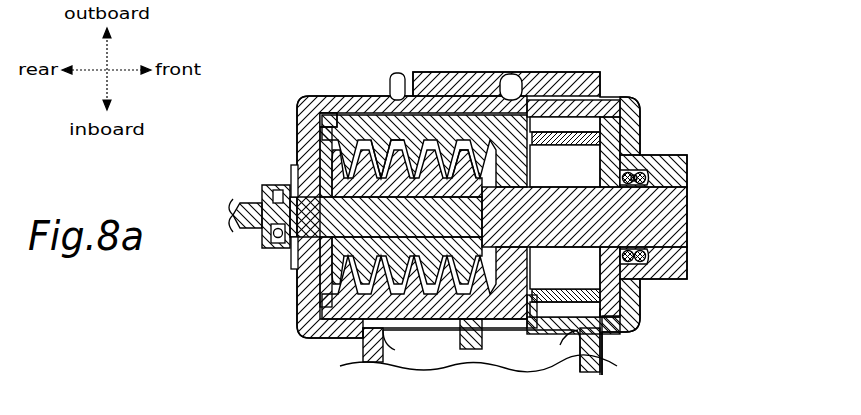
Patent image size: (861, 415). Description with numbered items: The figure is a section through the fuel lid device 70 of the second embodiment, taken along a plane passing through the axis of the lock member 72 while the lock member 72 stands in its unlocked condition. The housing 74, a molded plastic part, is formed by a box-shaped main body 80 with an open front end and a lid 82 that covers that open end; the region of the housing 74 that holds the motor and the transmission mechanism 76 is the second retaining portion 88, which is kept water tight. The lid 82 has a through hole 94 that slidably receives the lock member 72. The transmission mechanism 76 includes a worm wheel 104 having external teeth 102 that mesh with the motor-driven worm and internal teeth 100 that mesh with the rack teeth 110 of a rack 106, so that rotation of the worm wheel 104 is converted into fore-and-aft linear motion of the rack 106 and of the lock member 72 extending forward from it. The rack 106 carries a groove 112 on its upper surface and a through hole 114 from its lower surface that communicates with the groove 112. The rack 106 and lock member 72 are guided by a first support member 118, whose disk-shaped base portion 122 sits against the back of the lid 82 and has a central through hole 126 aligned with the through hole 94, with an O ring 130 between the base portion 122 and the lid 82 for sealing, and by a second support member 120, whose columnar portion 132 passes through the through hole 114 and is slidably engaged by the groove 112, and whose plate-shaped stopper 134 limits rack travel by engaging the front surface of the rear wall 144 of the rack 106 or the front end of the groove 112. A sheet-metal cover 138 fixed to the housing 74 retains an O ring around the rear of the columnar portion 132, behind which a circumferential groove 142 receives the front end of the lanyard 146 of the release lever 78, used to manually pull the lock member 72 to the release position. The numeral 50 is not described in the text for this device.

The vehicle frame bracket 50 is at (540, 352).
The fuel lid device 70 is at (710, 73).
The lock member 72 is at (683, 211).
The housing 74 is at (553, 37).
The transmission mechanism 76 is at (334, 100).
The release lever 78 is at (250, 206).
The main body 80 is at (560, 78).
The lid 82 is at (617, 100).
The second retaining portion 88 is at (504, 93).
The through hole 94 is at (688, 192).
The internal teeth 100 is at (503, 300).
The external teeth 102 is at (432, 282).
The worm wheel 104 is at (347, 332).
The rack 106 is at (312, 314).
The rack teeth 110 is at (377, 113).
The groove 112 is at (394, 136).
The through hole 114 is at (318, 130).
The first support member 118 is at (613, 335).
The second support member 120 is at (310, 280).
The base portion 122 is at (614, 299).
The through hole 126 is at (688, 257).
The O ring 130 is at (658, 163).
The columnar portion 132 is at (440, 165).
The stopper 134 is at (479, 155).
The cover 138 is at (291, 172).
The circumferential groove 142 is at (277, 244).
The rear wall 144 is at (312, 163).
The lanyard 146 is at (250, 233).